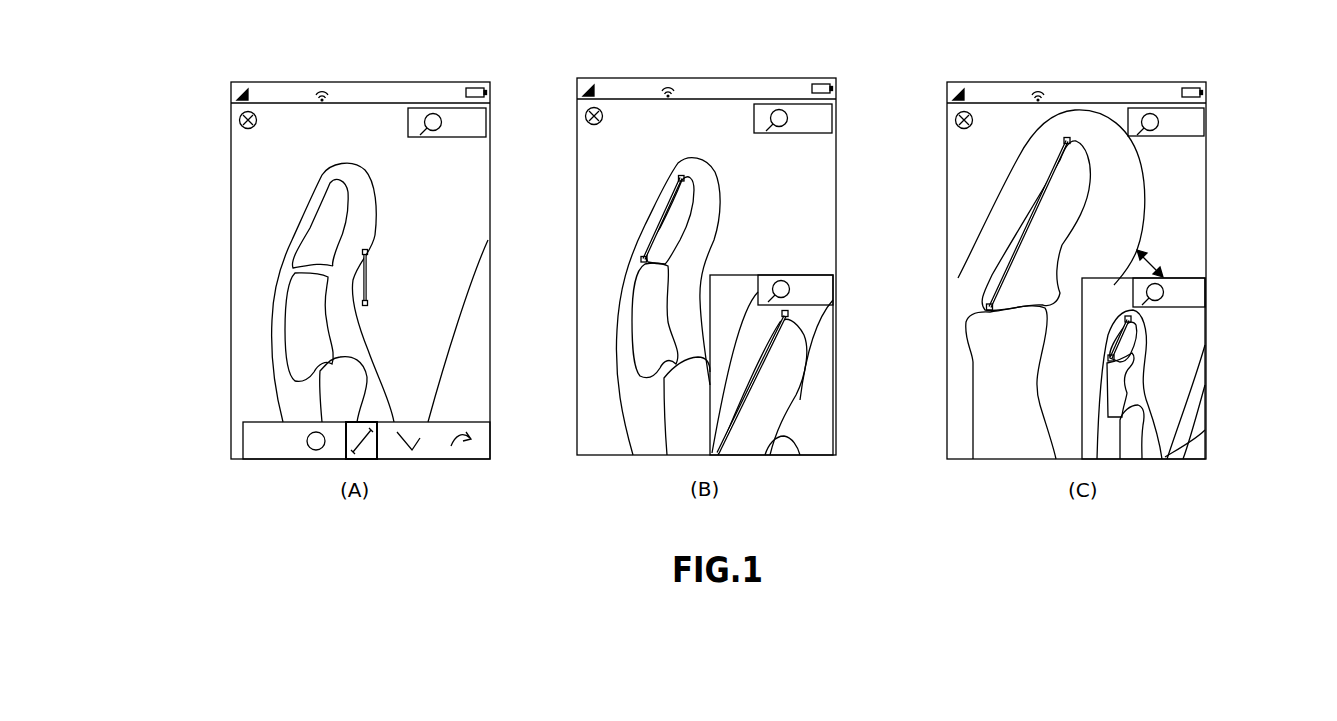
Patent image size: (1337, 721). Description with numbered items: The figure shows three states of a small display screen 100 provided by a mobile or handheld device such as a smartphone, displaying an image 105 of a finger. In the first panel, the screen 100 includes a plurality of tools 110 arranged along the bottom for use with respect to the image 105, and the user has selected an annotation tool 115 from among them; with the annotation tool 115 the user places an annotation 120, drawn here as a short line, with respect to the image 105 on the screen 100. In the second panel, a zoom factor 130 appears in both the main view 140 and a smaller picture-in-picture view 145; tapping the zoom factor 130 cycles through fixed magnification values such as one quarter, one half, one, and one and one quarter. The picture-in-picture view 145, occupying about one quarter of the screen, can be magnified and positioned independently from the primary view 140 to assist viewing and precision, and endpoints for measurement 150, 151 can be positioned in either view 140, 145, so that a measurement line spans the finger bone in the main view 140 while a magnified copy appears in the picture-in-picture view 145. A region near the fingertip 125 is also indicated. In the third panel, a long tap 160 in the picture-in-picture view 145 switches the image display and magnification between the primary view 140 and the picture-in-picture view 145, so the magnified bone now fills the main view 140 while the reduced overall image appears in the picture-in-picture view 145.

In FIG. 1A, the small display screen 100 is at (366, 78).
In FIG. 1B, the small display screen 100 is at (710, 74).
In FIG. 1C, the small display screen 100 is at (1126, 78).
In FIG. 1A, the image 105 is at (280, 286).
In FIG. 1A, the tools 110 is at (287, 459).
In FIG. 1A, the annotation tool 115 is at (366, 450).
In FIG. 1A, the annotation 120 is at (378, 286).
In FIG. 1B, the distal phalanx region of interest 125 is at (673, 218).
In FIG. 1B, the zoom factor 130 is at (830, 120).
In FIG. 1B, the main view 140 is at (806, 196).
In FIG. 1C, the main view 140 is at (1175, 183).
In FIG. 1B, the picture-in-picture view 145 is at (806, 400).
In FIG. 1C, the picture-in-picture view 145 is at (1183, 337).
In FIG. 1B, the endpoint for measurement 150 is at (683, 174).
In FIG. 1B, the endpoint for measurement 151 is at (641, 256).
In FIG. 1C, the long tap 160 is at (1152, 260).